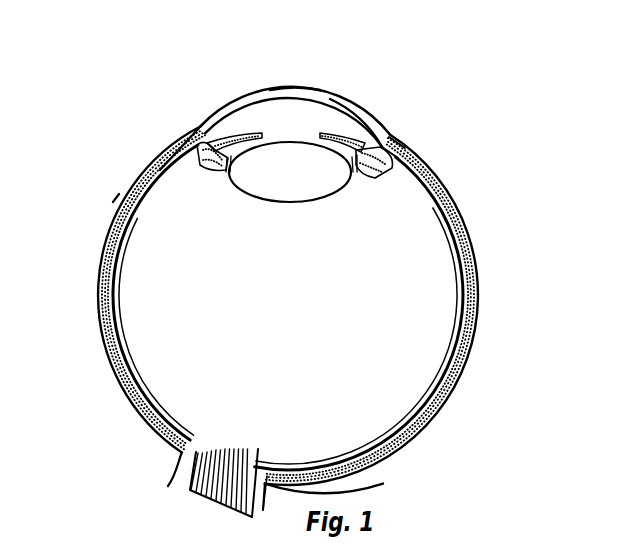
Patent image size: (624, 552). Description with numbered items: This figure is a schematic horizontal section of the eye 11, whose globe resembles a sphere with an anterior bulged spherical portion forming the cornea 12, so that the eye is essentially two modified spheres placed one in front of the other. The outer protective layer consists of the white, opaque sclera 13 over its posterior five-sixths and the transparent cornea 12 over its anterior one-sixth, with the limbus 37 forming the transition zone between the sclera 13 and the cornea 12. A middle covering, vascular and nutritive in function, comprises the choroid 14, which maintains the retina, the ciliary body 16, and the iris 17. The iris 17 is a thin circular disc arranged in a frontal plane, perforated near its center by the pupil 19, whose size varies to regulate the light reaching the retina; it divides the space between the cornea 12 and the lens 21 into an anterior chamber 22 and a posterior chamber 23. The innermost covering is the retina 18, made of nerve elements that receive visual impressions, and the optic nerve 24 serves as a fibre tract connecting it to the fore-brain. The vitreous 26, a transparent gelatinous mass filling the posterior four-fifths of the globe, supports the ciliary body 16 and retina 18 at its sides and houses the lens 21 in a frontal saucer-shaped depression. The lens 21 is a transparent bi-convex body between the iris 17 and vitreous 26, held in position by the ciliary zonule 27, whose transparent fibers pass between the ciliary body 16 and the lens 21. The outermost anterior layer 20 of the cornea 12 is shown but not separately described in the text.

The eye 11 is at (490, 327).
The cornea 12 is at (372, 98).
The sclera 13 is at (455, 389).
The choroid 14 is at (394, 446).
The ciliary body 16 is at (427, 161).
The iris 17 is at (240, 132).
The retina 18 is at (409, 414).
The pupil 19 is at (266, 137).
The corneal epithelium 20 is at (301, 85).
The lens 21 is at (301, 188).
The anterior chamber 22 is at (331, 122).
The posterior chamber 23 is at (356, 176).
The optic nerve 24 is at (200, 470).
The vitreous 26 is at (173, 306).
The ciliary zonule 27 is at (221, 178).
The limbus 37 is at (200, 124).